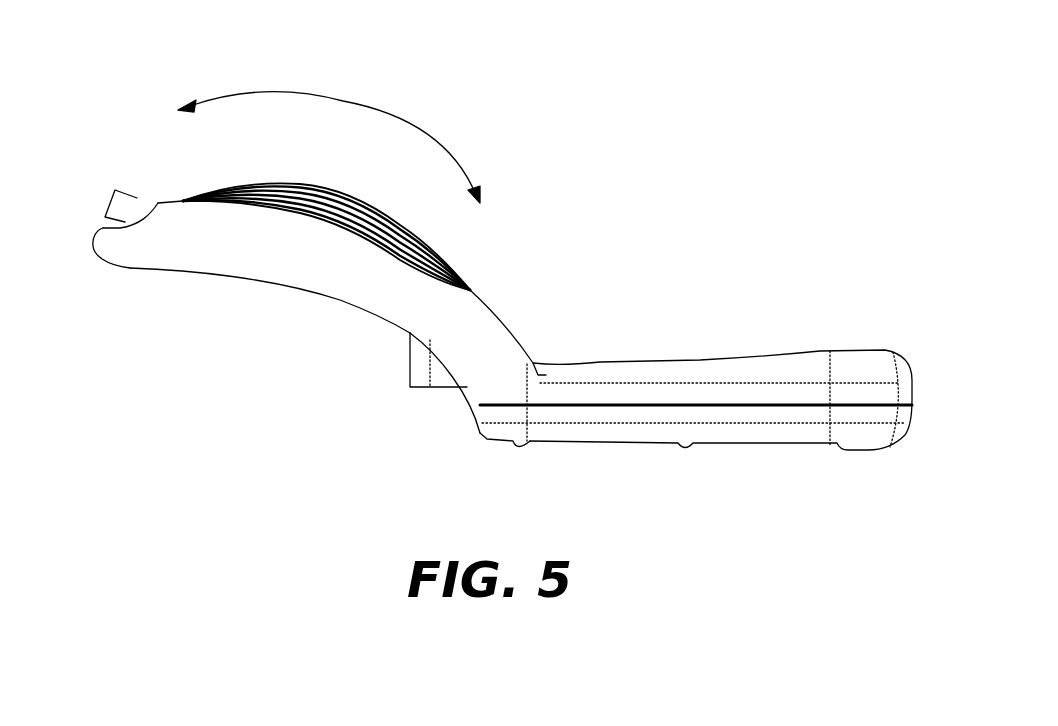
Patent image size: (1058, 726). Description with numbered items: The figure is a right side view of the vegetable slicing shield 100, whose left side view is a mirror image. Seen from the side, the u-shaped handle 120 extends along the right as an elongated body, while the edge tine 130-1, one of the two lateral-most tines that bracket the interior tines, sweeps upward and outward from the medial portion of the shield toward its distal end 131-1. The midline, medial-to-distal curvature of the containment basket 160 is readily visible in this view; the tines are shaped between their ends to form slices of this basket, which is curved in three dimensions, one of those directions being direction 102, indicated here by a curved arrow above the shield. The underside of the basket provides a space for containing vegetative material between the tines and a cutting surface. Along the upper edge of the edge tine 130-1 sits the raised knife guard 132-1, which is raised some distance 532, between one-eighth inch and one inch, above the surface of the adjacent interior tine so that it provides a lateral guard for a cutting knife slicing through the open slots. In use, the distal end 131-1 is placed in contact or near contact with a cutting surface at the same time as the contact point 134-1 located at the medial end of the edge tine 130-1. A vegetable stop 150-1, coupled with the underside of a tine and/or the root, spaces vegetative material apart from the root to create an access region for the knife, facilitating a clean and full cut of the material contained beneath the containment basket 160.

The vegetable slicing shield 100 is at (581, 33).
The direction 102 is at (343, 101).
The u-shaped handle 120 is at (887, 352).
The edge tine 130-1 is at (130, 258).
The distal end 131-1 is at (94, 246).
The raised knife guard 132-1 is at (158, 205).
The contact point 134-1 is at (487, 439).
The vegetable stop 150-1 is at (413, 373).
The containment basket 160 is at (256, 173).
The distance 532 is at (112, 192).